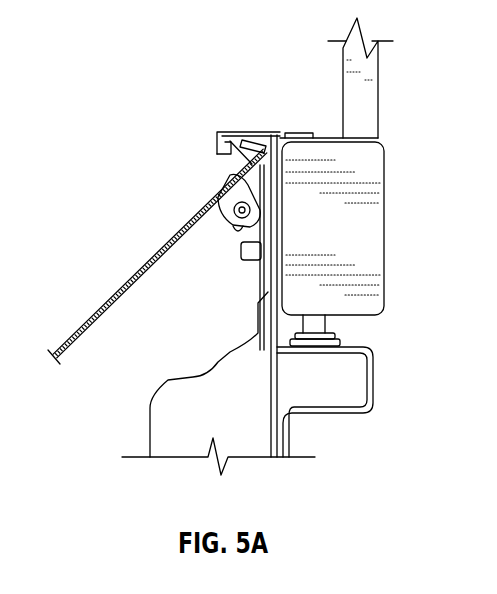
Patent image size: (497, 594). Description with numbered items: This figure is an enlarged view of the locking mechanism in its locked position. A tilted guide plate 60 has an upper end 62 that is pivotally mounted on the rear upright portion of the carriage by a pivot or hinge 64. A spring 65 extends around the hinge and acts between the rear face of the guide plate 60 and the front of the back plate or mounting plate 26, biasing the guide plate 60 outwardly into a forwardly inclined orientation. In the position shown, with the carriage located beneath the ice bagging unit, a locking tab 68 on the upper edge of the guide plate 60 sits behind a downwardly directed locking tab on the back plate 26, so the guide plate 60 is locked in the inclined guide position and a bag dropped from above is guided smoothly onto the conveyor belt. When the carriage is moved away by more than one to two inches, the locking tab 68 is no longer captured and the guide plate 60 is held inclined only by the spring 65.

The back plate 26 is at (258, 305).
The tilted guide plate 60 is at (97, 310).
The upper end 62 is at (232, 133).
The pivot or hinge 64 is at (234, 205).
The spring 65 is at (145, 284).
The locking tab 68 is at (258, 132).